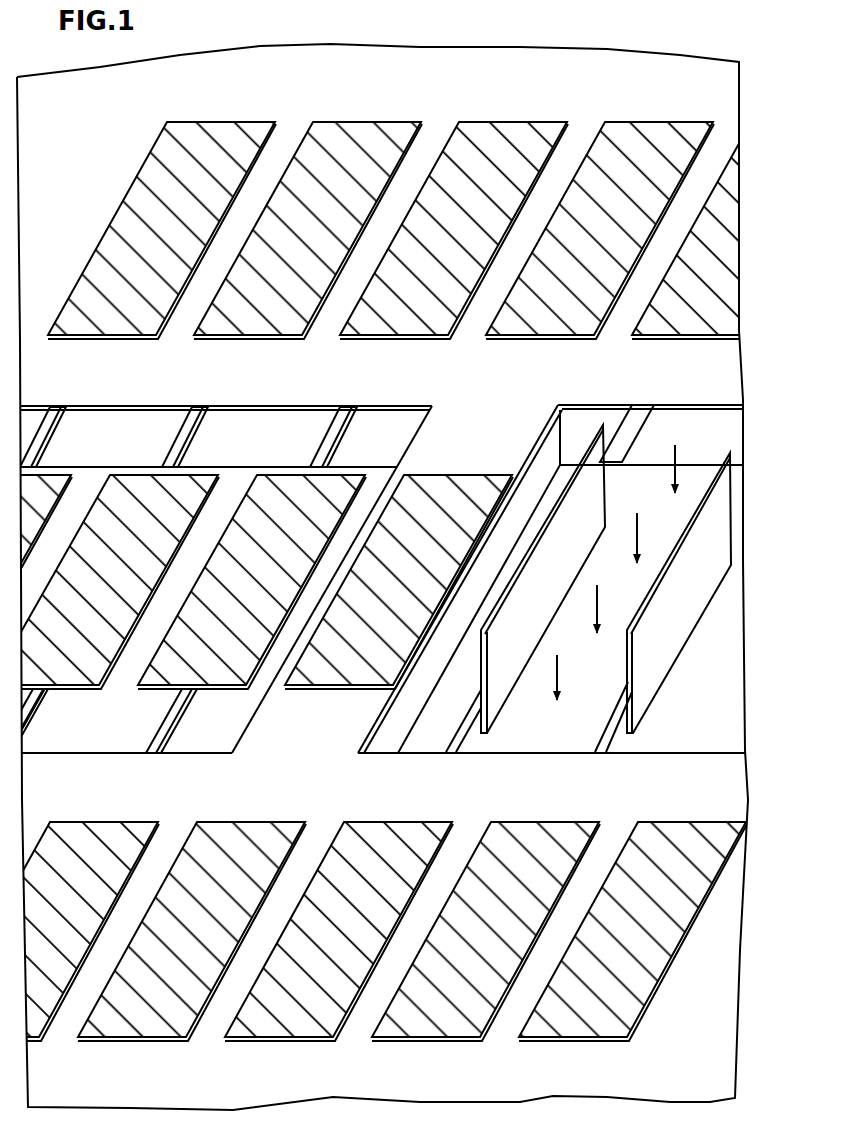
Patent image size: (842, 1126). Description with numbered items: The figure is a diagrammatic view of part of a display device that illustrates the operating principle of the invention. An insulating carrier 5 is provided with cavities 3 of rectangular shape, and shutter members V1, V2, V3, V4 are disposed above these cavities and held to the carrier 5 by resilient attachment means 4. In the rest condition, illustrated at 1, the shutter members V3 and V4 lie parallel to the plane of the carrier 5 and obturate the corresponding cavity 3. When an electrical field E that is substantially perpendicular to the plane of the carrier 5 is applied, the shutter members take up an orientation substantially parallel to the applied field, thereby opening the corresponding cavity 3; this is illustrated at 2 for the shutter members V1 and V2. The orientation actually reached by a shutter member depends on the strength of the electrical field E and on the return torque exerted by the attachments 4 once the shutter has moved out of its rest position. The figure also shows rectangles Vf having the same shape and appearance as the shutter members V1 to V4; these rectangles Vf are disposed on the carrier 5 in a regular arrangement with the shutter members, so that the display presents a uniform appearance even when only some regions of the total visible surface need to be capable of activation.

The rest condition 1 is at (390, 403).
The open condition 2 is at (592, 400).
The cavity 3 is at (110, 736).
The resilient attachment means 4 is at (46, 440).
The insulating carrier 5 is at (304, 789).
The shutter member V1 is at (508, 675).
The shutter member V2 is at (692, 598).
The shutter member V3 is at (73, 665).
The shutter member V4 is at (227, 666).
The rectangles Vf is at (252, 134).
The electrical field E is at (616, 572).